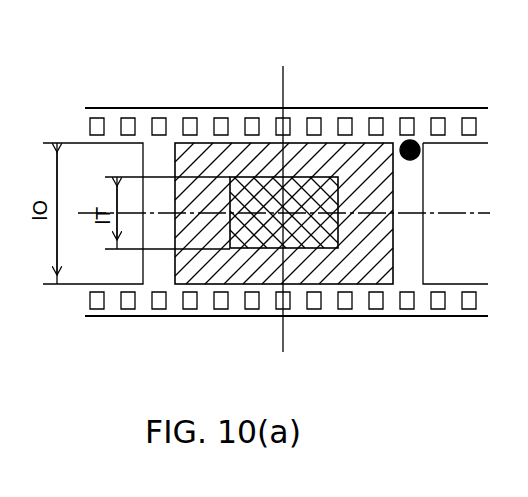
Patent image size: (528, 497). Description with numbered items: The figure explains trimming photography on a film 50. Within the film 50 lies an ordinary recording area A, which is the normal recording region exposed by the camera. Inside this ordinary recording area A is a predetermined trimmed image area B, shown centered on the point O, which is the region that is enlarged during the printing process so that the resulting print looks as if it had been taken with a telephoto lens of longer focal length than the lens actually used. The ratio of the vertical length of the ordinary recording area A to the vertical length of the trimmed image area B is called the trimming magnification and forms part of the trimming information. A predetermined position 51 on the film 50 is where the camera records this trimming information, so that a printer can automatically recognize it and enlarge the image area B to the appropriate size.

The ordinary recording area A is at (248, 157).
The trimmed image area B is at (312, 187).
The center point of exposure area O is at (283, 215).
The film 50 is at (423, 317).
The predetermined position 51 is at (414, 141).